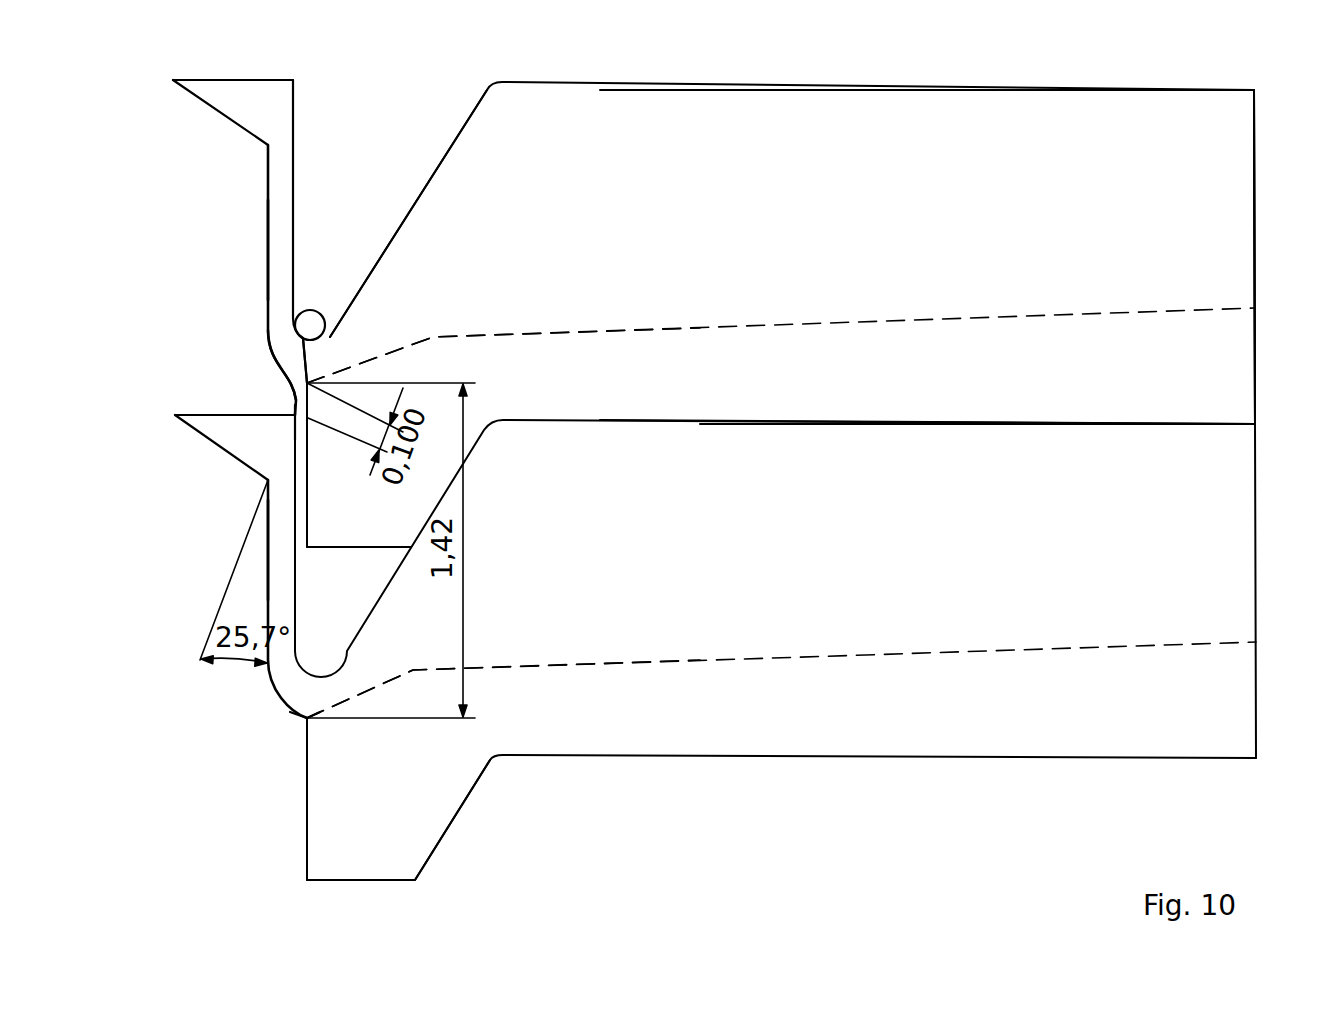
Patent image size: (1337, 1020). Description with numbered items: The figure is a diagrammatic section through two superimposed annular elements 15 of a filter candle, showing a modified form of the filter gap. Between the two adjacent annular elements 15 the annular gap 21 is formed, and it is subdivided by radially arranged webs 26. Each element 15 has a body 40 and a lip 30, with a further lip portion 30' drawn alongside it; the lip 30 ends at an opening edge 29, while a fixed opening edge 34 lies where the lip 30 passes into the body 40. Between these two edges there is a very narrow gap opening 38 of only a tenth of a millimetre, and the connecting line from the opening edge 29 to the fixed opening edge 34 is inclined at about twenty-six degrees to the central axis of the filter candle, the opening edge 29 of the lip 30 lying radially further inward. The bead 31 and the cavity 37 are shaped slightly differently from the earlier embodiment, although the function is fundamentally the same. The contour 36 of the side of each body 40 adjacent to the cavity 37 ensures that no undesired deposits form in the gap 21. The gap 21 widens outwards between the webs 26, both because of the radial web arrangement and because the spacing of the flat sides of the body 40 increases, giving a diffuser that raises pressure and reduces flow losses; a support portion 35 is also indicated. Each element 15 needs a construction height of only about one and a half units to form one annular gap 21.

The annular element 15 is at (1262, 198).
The annular gap 21 is at (1205, 405).
The web 26 is at (1205, 380).
The opening edge of the lip 29 is at (296, 79).
The lip 30 is at (246, 431).
The contact arm portion 30' is at (226, 400).
The bead 31 is at (237, 98).
The fixed opening edge 34 is at (293, 306).
The support block 35 is at (378, 522).
The contour 36 is at (383, 350).
The cavity 37 is at (380, 196).
The gap opening 38 is at (297, 410).
The body 40 is at (1222, 147).